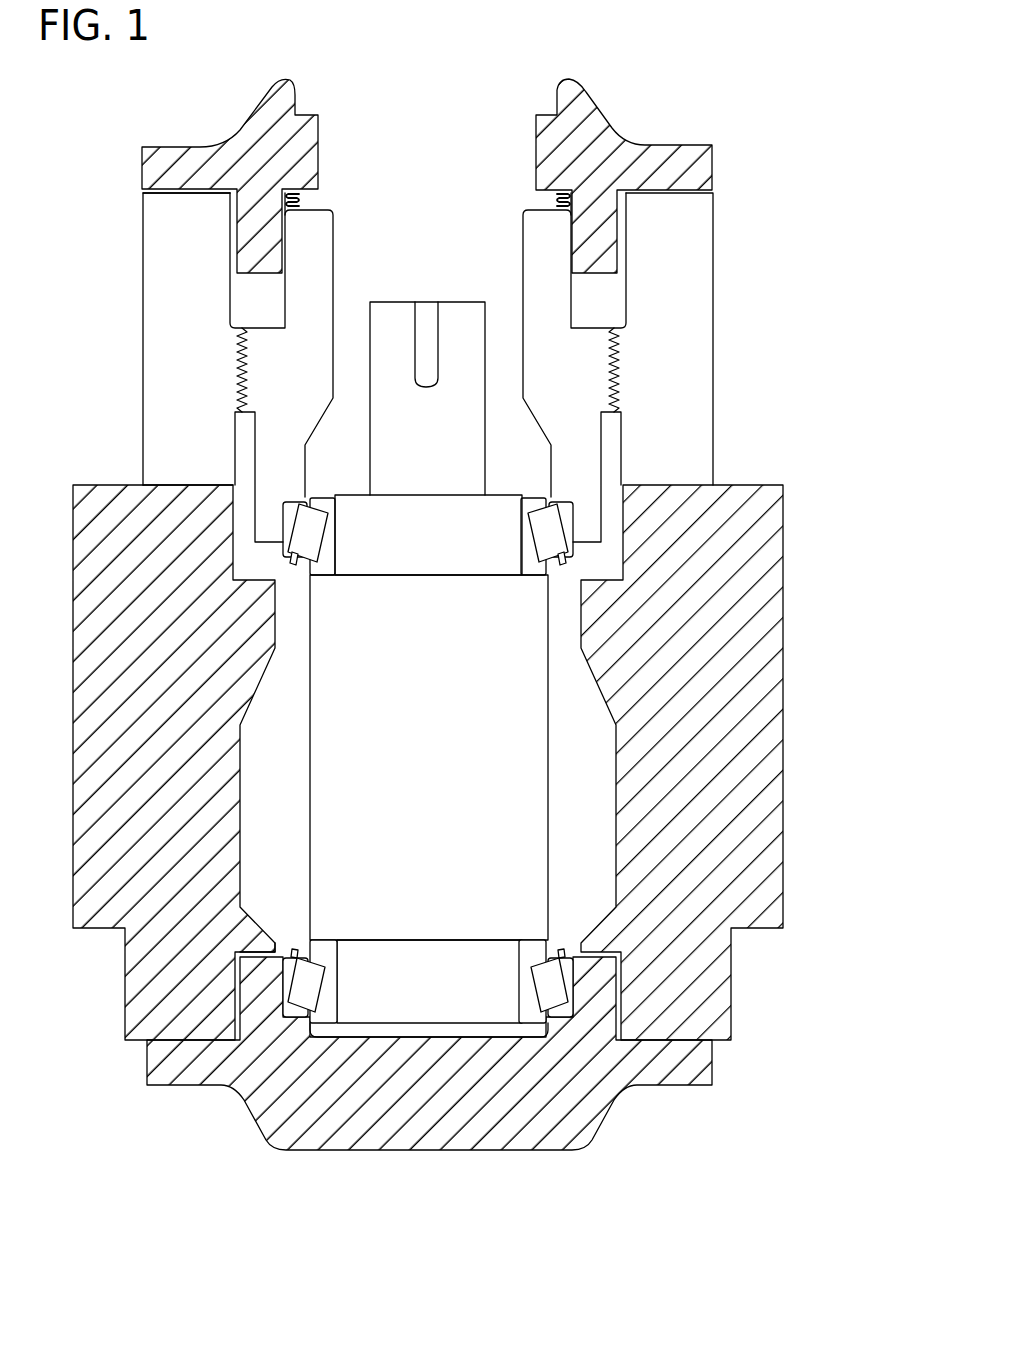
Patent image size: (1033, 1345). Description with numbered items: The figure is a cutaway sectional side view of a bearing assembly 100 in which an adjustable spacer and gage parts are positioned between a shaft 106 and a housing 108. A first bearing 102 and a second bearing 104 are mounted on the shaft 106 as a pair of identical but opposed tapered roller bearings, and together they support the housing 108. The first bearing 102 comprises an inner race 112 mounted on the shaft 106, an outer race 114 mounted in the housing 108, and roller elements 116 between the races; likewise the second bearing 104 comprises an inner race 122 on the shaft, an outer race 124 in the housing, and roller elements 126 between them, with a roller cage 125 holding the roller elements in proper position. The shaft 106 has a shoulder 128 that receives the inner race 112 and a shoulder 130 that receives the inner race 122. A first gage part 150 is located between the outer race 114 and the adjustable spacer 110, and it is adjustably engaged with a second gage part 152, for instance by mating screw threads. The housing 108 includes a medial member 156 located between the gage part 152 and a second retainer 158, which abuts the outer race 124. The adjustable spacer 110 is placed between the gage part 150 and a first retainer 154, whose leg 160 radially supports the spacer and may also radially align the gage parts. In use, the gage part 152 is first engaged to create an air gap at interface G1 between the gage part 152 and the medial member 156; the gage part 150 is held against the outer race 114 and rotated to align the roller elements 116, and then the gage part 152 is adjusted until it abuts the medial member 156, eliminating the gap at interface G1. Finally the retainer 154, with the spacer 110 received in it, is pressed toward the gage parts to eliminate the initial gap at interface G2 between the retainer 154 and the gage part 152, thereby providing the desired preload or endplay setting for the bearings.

The bearing assembly 100 is at (428, 126).
The first bearing 102 is at (323, 488).
The second bearing 104 is at (298, 945).
The shaft 106 is at (550, 838).
The housing 108 is at (812, 628).
The adjustable spacer 110 is at (303, 202).
The inner race 112 is at (323, 580).
The outer race 114 is at (558, 506).
The roller elements 116 is at (315, 538).
The inner race 122 is at (328, 962).
The outer race 124 is at (290, 1025).
The roller cage 125 is at (563, 948).
The roller elements 126 is at (318, 960).
The shoulder 128 is at (537, 590).
The shoulder 130 is at (538, 938).
The first gage part 150 is at (528, 262).
The second gage part 152 is at (698, 282).
The first retainer 154 is at (598, 128).
The medial member 156 is at (770, 737).
The second retainer 158 is at (583, 1150).
The leg 160 is at (247, 228).
The interface G1 is at (137, 486).
The interface G2 is at (140, 193).